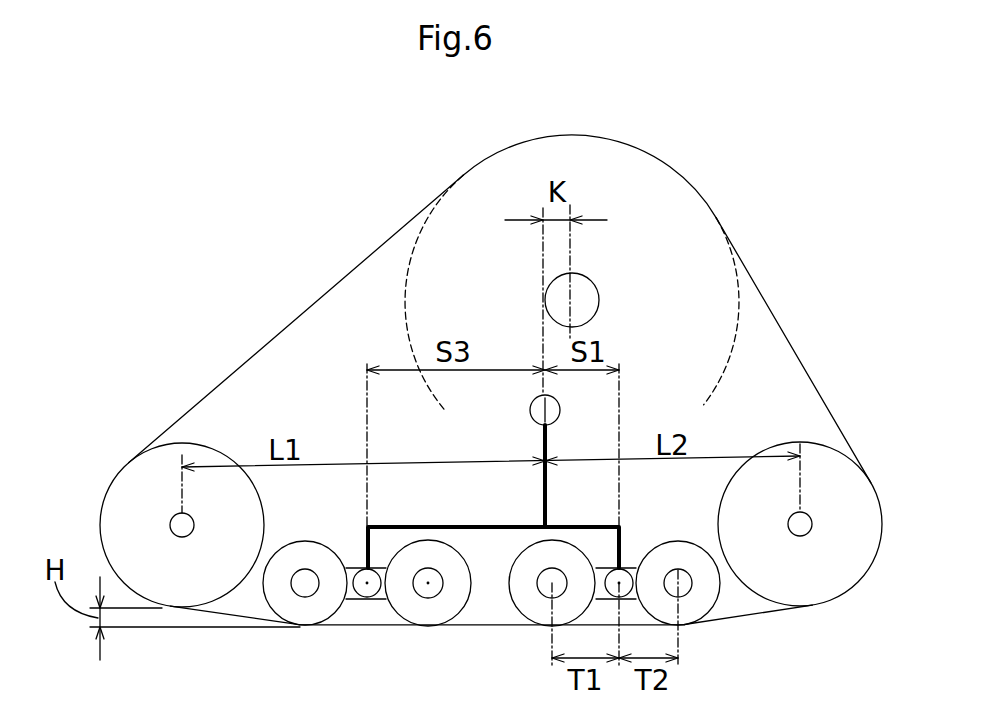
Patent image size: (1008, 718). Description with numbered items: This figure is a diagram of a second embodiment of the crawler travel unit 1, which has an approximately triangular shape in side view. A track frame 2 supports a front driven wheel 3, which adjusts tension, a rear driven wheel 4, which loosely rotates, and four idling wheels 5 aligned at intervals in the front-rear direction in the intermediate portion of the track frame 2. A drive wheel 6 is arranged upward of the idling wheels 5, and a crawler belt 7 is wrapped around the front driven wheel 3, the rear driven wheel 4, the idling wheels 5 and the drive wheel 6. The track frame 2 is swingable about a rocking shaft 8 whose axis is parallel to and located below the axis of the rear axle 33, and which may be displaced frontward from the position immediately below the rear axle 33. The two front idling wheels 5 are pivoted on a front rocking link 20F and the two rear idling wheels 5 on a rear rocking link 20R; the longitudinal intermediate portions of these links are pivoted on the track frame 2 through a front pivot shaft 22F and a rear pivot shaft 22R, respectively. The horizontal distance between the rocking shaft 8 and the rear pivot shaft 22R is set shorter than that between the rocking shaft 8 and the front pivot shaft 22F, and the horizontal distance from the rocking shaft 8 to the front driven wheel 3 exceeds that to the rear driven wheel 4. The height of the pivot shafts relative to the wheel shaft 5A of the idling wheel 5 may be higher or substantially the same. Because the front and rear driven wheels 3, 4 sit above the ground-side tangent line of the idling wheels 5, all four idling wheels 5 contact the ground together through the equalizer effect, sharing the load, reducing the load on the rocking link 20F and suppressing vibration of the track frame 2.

The crawler travel unit 1 is at (320, 250).
The track frame 2 is at (470, 524).
The front driven wheel 3 is at (138, 473).
The rear driven wheel 4 is at (838, 475).
The idling wheel 5 is at (330, 603).
The wheel shaft 5A is at (545, 595).
The drive wheel 6 is at (722, 308).
The crawler belt 7 is at (777, 352).
The rocking shaft 8 is at (530, 408).
The front rocking link 20F is at (342, 557).
The rear rocking link 20R is at (633, 570).
The front pivot shaft 22F is at (364, 573).
The rear pivot shaft 22R is at (623, 570).
The rear axle 33 is at (580, 296).